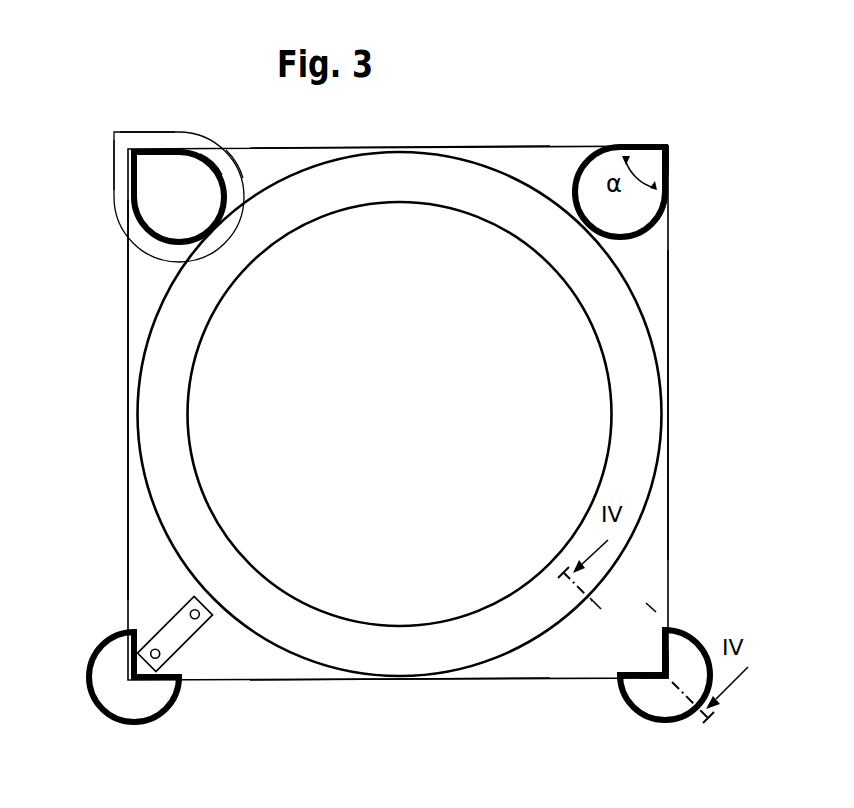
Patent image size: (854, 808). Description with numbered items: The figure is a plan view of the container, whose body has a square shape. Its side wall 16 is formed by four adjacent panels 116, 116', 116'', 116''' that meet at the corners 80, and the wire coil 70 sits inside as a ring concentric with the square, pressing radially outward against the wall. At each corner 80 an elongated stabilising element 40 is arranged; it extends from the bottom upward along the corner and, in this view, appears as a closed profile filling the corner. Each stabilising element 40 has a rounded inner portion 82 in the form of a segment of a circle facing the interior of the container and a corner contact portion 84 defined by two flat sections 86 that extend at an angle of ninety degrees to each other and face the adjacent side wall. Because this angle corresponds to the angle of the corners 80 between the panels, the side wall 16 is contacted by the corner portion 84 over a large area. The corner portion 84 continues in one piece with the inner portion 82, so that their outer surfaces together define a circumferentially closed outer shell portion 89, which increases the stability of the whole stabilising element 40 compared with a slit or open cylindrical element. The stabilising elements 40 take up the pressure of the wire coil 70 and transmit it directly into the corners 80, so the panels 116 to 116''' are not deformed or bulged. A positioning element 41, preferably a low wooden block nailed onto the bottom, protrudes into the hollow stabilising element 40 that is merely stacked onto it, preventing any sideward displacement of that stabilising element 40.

The side wall 16 is at (668, 285).
The stabilising element 40 is at (142, 262).
The positioning element 41 is at (173, 641).
The wire coil 70 is at (643, 372).
The corner 80 is at (676, 147).
The inner portion 82 is at (236, 156).
The corner contact portion 84 is at (114, 134).
The flat section 86 is at (124, 176).
The outer shell portion 89 is at (212, 160).
The panel 116 is at (87, 400).
The panel 116' is at (400, 117).
The panel 116'' is at (722, 405).
The panel 116''' is at (400, 708).